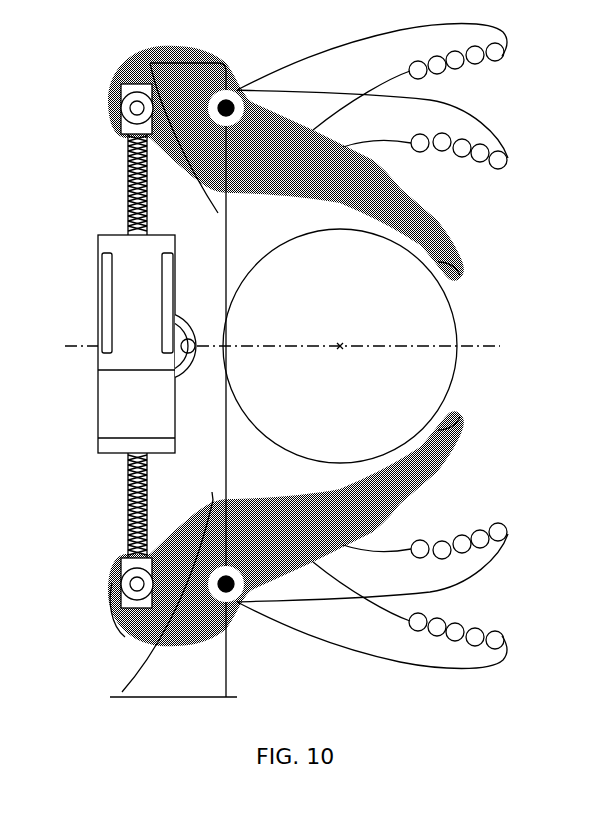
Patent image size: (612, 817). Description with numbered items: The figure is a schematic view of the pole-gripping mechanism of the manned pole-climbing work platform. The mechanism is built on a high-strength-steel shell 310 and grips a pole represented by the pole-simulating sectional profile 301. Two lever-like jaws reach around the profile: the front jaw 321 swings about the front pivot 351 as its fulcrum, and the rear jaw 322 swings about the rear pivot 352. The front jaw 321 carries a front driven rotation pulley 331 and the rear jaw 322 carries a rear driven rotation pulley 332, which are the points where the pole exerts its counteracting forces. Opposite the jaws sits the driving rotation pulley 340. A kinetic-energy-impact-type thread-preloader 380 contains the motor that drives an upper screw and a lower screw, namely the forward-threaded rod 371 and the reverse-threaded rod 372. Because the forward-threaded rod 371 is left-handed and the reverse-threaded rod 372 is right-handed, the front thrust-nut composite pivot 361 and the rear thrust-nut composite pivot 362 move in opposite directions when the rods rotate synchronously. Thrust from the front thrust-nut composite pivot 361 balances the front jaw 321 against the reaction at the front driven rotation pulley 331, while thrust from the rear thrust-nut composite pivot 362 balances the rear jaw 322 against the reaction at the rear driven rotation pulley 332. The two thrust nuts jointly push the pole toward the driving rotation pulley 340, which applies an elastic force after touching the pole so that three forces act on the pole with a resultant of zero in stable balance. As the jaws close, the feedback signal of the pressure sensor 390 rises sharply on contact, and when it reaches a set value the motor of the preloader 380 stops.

The pole-simulating sectional profile 301 is at (443, 362).
The high-strength-steel shell 310 is at (170, 677).
The front jaw 321 is at (423, 205).
The rear jaw 322 is at (423, 485).
The front driven rotation pulley 331 is at (463, 270).
The rear driven rotation pulley 332 is at (463, 425).
The driving rotation pulley 340 is at (200, 378).
The front pivot 351 is at (237, 88).
The rear pivot 352 is at (240, 603).
The front thrust-nut composite pivot 361 is at (121, 115).
The rear thrust-nut composite pivot 362 is at (124, 577).
The forward-threaded rod 371 is at (128, 166).
The reverse-threaded rod 372 is at (130, 523).
The kinetic-energy-impact-type thread-preloader 380 is at (142, 335).
The pressure sensor 390 is at (115, 618).